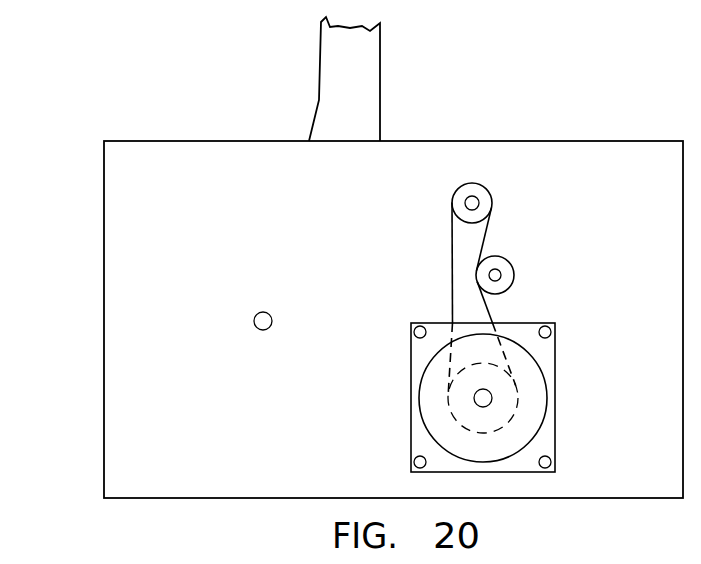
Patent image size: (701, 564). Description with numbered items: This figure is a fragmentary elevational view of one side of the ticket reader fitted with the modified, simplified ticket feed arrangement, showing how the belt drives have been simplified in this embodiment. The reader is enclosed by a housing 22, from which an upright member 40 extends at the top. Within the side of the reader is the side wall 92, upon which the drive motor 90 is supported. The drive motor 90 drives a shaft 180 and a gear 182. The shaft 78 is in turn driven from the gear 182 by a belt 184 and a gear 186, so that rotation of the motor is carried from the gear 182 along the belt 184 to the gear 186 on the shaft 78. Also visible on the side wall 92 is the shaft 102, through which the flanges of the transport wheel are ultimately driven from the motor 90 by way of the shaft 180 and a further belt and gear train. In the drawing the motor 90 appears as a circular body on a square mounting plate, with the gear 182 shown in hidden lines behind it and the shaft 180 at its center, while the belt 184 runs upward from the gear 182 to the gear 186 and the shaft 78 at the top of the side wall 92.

The housing 22 is at (103, 332).
The support column 40 is at (364, 86).
The side wall 92 is at (328, 442).
The shaft 102 is at (255, 321).
The shaft 78 is at (480, 193).
The gear 186 is at (483, 207).
The belt 184 is at (485, 243).
The drive motor 90 is at (540, 405).
The shaft 180 is at (491, 394).
The gear 182 is at (496, 422).